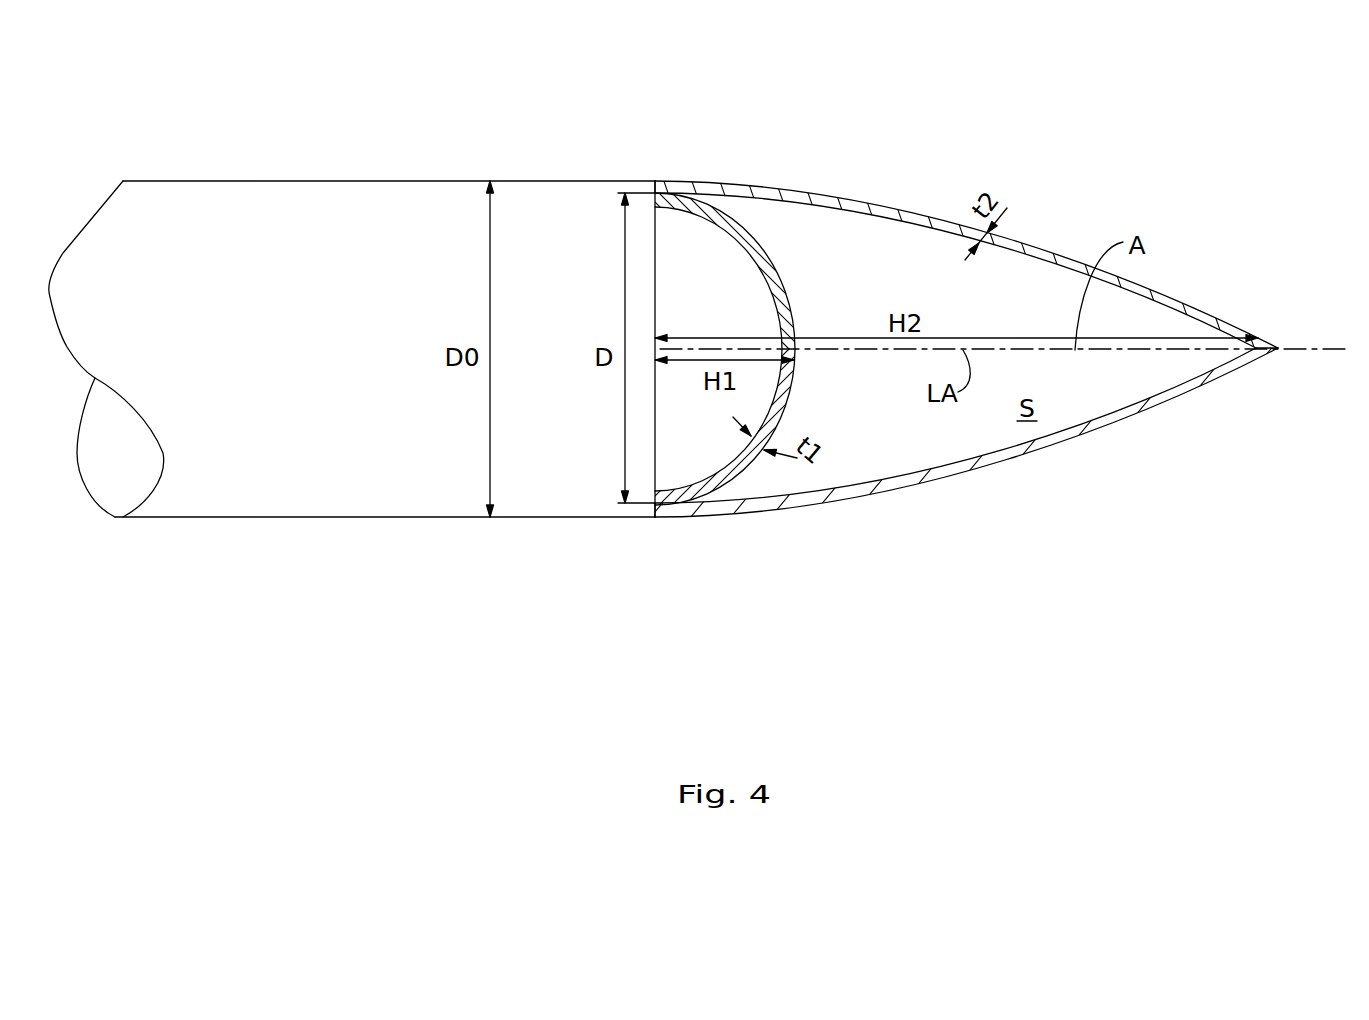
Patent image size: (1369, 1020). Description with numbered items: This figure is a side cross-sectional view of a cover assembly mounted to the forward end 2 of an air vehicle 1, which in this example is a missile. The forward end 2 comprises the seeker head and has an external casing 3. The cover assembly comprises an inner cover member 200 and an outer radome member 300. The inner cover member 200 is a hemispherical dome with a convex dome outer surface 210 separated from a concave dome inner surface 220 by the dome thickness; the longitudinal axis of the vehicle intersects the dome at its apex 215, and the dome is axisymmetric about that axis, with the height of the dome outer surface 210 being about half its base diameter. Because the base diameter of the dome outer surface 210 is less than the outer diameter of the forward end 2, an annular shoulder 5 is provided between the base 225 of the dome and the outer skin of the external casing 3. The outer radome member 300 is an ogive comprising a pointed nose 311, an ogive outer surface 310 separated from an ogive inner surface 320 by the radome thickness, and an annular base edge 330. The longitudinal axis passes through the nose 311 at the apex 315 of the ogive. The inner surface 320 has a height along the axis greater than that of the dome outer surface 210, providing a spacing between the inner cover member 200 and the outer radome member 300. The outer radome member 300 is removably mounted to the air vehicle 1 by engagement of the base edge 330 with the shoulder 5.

The air vehicle 1 is at (378, 180).
The forward end 2 is at (515, 181).
The external casing 3 is at (318, 518).
The annular shoulder 5 is at (666, 517).
The inner cover member 200 is at (762, 245).
The dome outer surface 210 is at (743, 471).
The apex 215 is at (795, 347).
The dome inner surface 220 is at (731, 462).
The base 225 is at (652, 501).
The outer radome member 300 is at (1055, 243).
The ogive outer surface 310 is at (950, 218).
The pointed nose 311 is at (1278, 348).
The apex 315 is at (1265, 352).
The ogive inner surface 320 is at (877, 212).
The annular base edge 330 is at (655, 183).